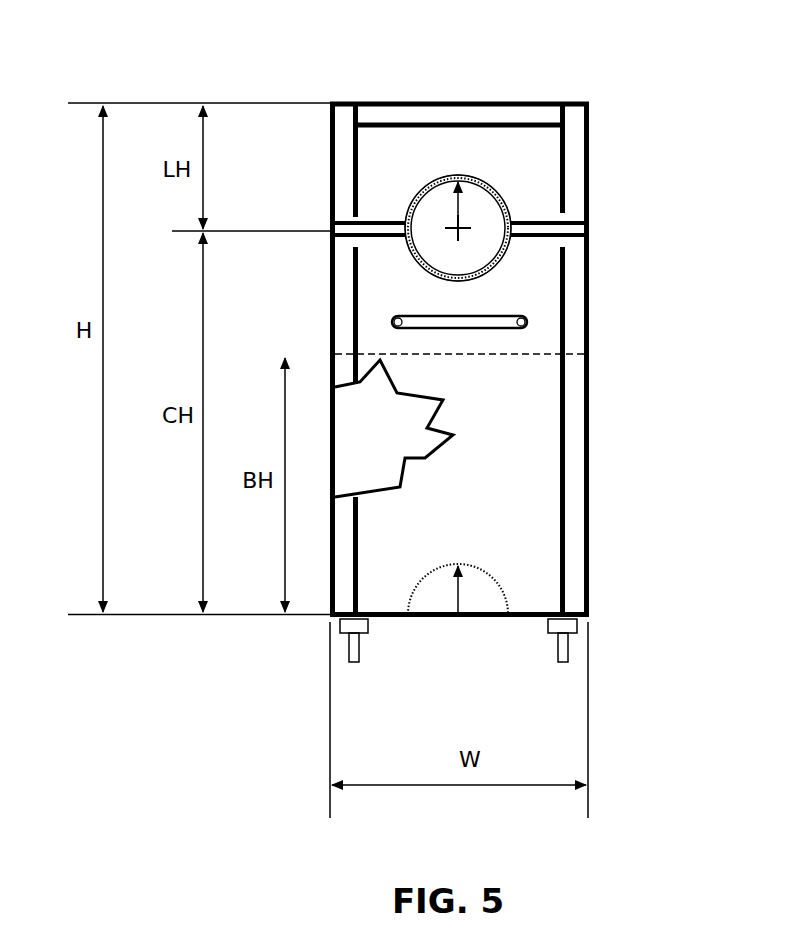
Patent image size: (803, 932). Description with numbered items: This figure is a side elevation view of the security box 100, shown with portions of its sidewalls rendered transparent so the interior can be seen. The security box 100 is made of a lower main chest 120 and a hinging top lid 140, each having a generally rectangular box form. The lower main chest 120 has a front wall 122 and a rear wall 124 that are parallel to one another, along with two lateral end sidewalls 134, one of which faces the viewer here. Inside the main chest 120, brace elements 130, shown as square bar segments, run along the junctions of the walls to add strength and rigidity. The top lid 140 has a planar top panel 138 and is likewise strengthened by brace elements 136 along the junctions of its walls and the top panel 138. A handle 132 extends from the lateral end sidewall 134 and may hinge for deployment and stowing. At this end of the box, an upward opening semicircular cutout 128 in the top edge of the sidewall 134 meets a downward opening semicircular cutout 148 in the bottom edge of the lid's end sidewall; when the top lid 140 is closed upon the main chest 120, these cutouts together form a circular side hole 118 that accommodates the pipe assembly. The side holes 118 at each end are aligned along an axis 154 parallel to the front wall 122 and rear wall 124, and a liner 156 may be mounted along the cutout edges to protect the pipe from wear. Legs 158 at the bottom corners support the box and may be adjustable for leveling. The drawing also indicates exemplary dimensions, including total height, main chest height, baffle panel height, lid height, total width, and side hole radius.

The security box 100 is at (402, 60).
The side hole 118 is at (490, 232).
The lower main chest 120 is at (610, 325).
The front wall 122 is at (332, 380).
The rear wall 124 is at (588, 446).
The semicircular cutout 128 is at (483, 279).
The brace elements 130 is at (350, 567).
The handle 132 is at (460, 313).
The sidewall 134 is at (394, 455).
The brace elements 136 is at (497, 112).
The top panel 138 is at (402, 102).
The top lid 140 is at (609, 108).
The semicircular cutout 148 is at (464, 175).
The axis 154 is at (453, 222).
The liner 156 is at (423, 255).
The legs 158 is at (361, 636).